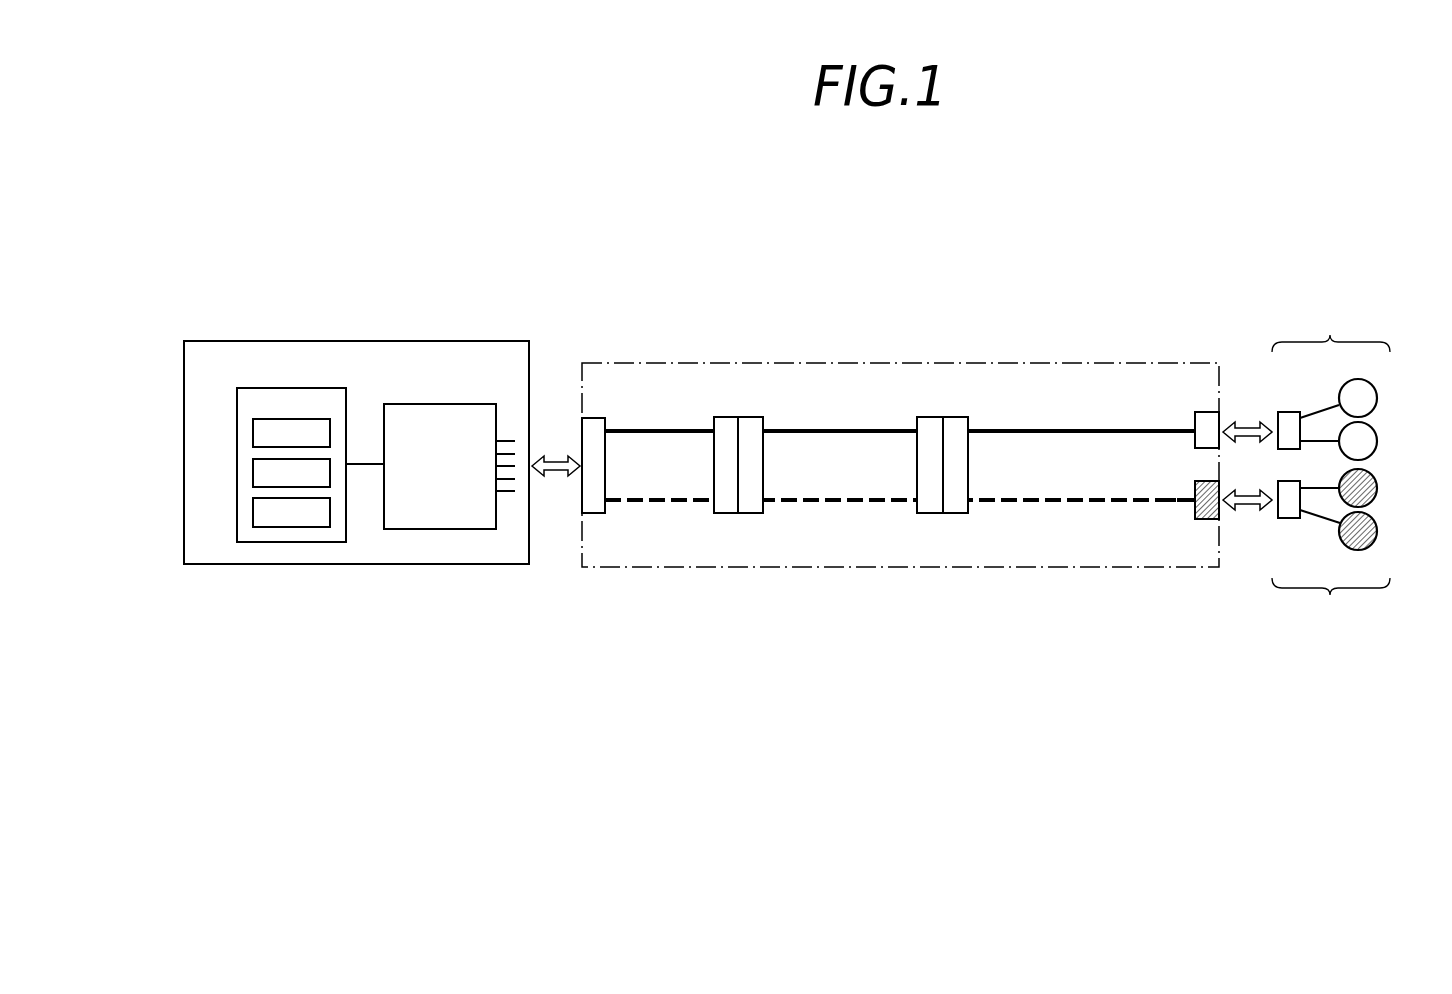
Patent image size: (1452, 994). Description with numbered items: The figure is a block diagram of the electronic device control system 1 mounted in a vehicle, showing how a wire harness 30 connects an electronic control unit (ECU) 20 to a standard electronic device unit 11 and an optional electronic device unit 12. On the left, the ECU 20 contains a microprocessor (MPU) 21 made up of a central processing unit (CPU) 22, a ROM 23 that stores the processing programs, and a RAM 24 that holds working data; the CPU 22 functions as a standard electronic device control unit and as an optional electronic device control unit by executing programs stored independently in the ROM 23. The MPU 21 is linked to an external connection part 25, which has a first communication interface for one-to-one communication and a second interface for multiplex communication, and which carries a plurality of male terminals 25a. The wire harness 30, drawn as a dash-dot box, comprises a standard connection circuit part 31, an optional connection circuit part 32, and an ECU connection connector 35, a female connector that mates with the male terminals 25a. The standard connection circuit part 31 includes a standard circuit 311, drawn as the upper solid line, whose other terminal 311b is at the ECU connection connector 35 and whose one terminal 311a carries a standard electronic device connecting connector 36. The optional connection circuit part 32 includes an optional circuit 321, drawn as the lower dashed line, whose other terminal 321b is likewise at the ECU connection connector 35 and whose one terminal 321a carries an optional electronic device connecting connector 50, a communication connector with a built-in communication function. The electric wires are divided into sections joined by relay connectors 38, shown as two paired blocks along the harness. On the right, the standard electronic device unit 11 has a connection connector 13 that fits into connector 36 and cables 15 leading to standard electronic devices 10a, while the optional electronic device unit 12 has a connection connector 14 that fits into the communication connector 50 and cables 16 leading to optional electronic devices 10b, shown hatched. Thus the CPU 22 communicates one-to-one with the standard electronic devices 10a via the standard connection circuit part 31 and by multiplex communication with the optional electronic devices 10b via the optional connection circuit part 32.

The electronic device control system 1 is at (1312, 183).
The electronic control unit (ECU) 20 is at (298, 341).
The microprocessor (MPU) 21 is at (237, 404).
The central processing unit (CPU) 22 is at (253, 431).
The ROM 23 is at (253, 469).
The RAM 24 is at (253, 507).
The external connection part 25 is at (400, 404).
The male terminals 25a is at (506, 493).
The wire harness 30 is at (973, 362).
The ECU connection connector 35 is at (595, 418).
The standard electronic device connecting connector 36 is at (1217, 412).
The optional electronic device connecting connector (communication connector) 50 is at (1217, 519).
The standard connection circuit part 31 is at (906, 377).
The standard circuit 311 is at (1030, 430).
The one terminal of the standard circuit 311a is at (1190, 429).
The other terminal of the standard circuit 311b is at (607, 429).
The optional connection circuit part 32 is at (906, 559).
The optional circuit 321 is at (1030, 502).
The one terminal of the optional circuit 321a is at (1190, 502).
The other terminal of the optional circuit 321b is at (607, 502).
The relay connectors 38 is at (752, 513).
The standard electronic device unit 11 is at (1353, 384).
The optional electronic device unit 12 is at (1353, 548).
The connection connector 13 is at (1287, 412).
The connection connector 14 is at (1290, 518).
The cables 15 is at (1318, 438).
The cables 16 is at (1315, 520).
The standard electronic devices 10a is at (1377, 397).
The optional electronic devices 10b is at (1377, 488).